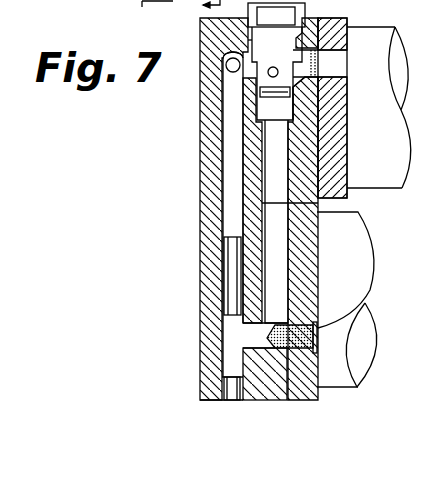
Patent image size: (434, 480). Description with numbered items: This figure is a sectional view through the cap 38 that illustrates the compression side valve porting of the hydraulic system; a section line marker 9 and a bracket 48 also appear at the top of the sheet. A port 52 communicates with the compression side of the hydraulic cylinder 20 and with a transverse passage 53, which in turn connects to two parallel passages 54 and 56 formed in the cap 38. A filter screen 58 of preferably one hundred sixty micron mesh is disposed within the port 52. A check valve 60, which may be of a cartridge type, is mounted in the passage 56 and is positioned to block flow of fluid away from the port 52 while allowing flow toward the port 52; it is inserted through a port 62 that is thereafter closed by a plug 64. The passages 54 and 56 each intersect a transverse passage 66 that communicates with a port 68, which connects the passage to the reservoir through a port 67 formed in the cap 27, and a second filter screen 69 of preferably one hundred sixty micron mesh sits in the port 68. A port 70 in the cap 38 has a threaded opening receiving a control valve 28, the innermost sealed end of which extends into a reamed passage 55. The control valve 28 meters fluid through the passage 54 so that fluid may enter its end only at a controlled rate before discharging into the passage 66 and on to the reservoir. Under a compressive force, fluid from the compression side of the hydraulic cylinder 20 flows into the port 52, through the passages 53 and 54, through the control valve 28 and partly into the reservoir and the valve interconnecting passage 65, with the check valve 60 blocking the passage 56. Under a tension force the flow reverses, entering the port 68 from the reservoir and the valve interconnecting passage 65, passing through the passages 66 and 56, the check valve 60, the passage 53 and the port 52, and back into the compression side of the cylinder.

The section line 9 is at (204, 7).
The hydraulic cylinder 20 is at (377, 244).
The cap 27 is at (337, 18).
The control valve 28 is at (300, 9).
The cap 38 is at (200, 140).
The line 48 is at (149, 12).
The port 52 is at (353, 313).
The transverse passage 53 is at (247, 340).
The passage 54 is at (318, 202).
The reamed passage 55 is at (265, 105).
The passage 56 is at (227, 163).
The filter screen 58 is at (288, 352).
The check valve 60 is at (225, 255).
The port 62 is at (233, 397).
The plug 64 is at (227, 391).
The valve interconnecting passage 65 is at (226, 67).
The transverse passage 66 is at (223, 53).
The port 67 is at (348, 60).
The port 68 is at (346, 50).
The filter screen 69 is at (322, 80).
The port 70 is at (250, 40).